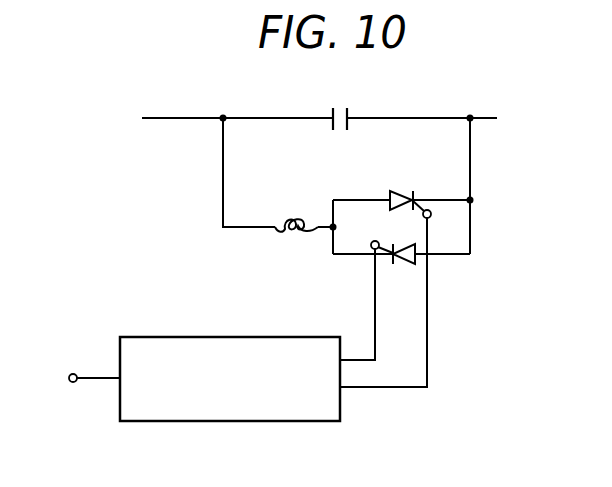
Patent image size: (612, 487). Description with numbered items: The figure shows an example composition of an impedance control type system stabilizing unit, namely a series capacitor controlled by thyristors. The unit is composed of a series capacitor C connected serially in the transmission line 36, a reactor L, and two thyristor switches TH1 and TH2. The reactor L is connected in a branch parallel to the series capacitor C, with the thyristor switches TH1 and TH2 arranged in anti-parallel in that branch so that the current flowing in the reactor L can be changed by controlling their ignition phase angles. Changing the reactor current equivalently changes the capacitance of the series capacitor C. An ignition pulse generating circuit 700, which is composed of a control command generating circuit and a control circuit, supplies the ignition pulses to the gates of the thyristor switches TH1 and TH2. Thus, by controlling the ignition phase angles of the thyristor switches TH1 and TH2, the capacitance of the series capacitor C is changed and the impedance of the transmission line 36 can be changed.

The transmission line 36 is at (176, 117).
The series capacitor C is at (340, 105).
The reactor L is at (296, 213).
The thyristor switch TH1 is at (393, 190).
The thyristor switch TH2 is at (405, 266).
The ignition pulse generating circuit 700 is at (160, 337).